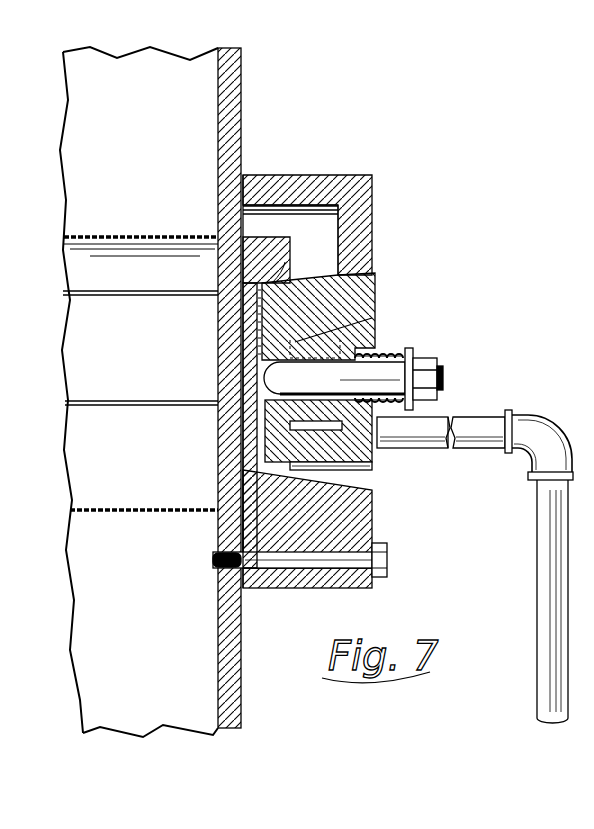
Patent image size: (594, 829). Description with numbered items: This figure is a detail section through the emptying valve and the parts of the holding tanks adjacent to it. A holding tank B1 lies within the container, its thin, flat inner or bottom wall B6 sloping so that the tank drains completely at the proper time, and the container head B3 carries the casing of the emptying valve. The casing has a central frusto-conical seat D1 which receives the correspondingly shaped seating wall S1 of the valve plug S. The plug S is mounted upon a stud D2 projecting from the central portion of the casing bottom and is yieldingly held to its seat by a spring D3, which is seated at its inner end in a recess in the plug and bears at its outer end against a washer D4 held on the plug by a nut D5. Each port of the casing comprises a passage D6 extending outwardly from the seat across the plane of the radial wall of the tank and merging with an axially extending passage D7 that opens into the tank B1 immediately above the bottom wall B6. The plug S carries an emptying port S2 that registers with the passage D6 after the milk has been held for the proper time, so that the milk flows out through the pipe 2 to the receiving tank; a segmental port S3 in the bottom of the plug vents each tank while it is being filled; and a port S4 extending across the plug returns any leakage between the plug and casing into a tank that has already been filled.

The tank B1 is at (139, 392).
The inner or bottom wall B6 is at (122, 238).
The head B3 is at (232, 108).
The axially extending passage D7 is at (243, 241).
The frusto-conical seat D1 is at (290, 268).
The passage D6 is at (290, 240).
The seating wall S1 is at (372, 262).
The valve plug S is at (372, 286).
The emptying port S2 is at (376, 326).
The port S4 is at (293, 427).
The segmental port S3 is at (374, 476).
The stud D2 is at (334, 378).
The spring D3 is at (412, 363).
The washer D4 is at (415, 350).
The nut D5 is at (441, 379).
The pipe 2 is at (545, 543).